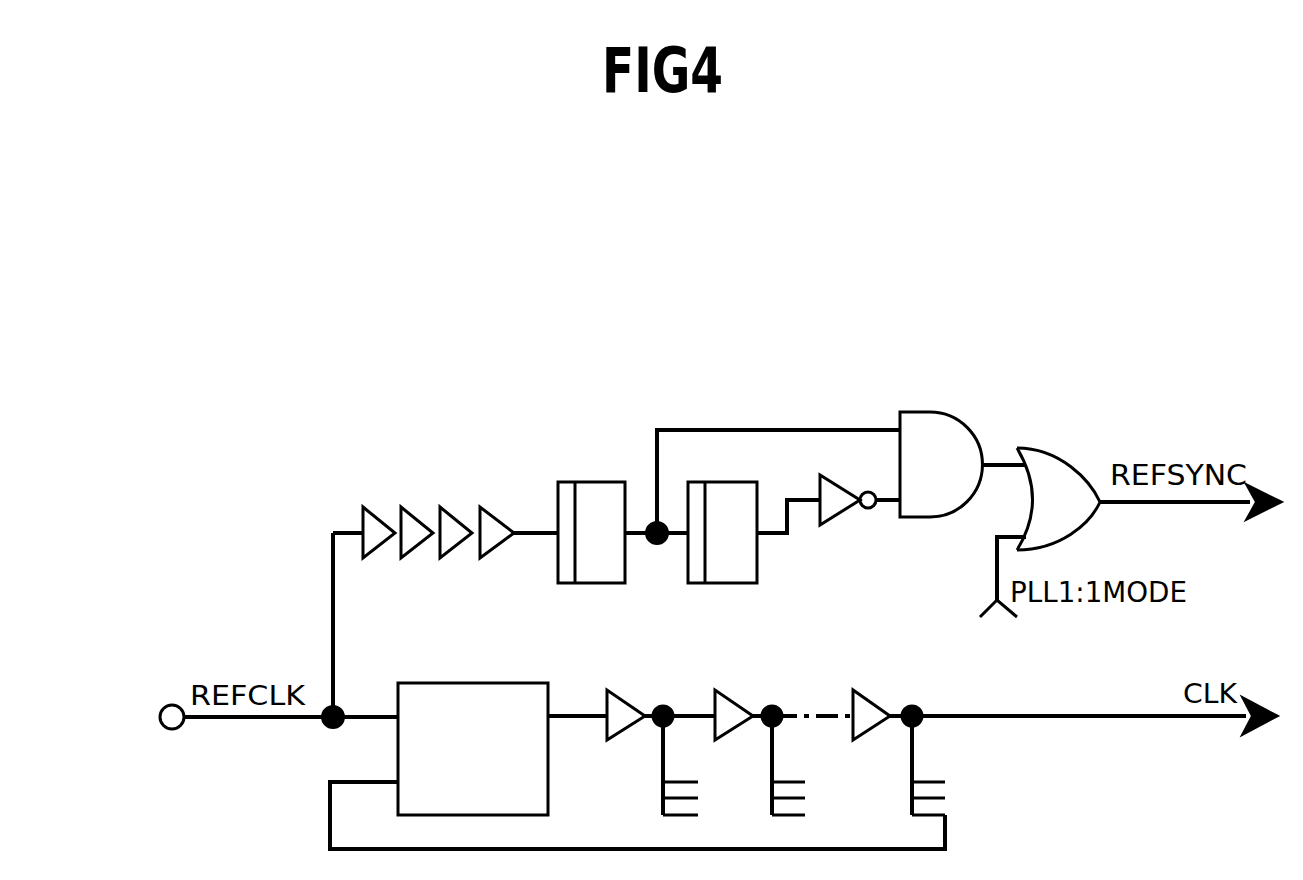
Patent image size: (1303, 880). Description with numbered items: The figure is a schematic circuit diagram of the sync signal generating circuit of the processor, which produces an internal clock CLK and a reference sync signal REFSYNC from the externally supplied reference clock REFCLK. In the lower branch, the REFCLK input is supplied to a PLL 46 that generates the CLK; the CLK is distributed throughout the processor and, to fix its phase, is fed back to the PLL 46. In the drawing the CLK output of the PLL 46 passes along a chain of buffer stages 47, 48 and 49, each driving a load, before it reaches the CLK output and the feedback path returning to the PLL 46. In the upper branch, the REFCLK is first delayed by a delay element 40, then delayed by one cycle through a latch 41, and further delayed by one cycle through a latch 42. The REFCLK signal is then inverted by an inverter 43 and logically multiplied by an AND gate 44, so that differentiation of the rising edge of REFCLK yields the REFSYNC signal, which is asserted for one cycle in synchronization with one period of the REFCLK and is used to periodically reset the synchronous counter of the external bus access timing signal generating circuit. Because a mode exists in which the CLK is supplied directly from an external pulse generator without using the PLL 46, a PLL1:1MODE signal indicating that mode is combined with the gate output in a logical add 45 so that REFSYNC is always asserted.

The delay element 40 is at (423, 510).
The latch 41 is at (572, 482).
The latch 42 is at (713, 482).
The inverter 43 is at (830, 475).
The AND gate 44 is at (952, 406).
The logical add 45 is at (1073, 457).
The PLL 46 is at (470, 683).
The first clock buffer 47 is at (618, 693).
The second clock buffer 48 is at (740, 700).
The last clock buffer 49 is at (868, 698).